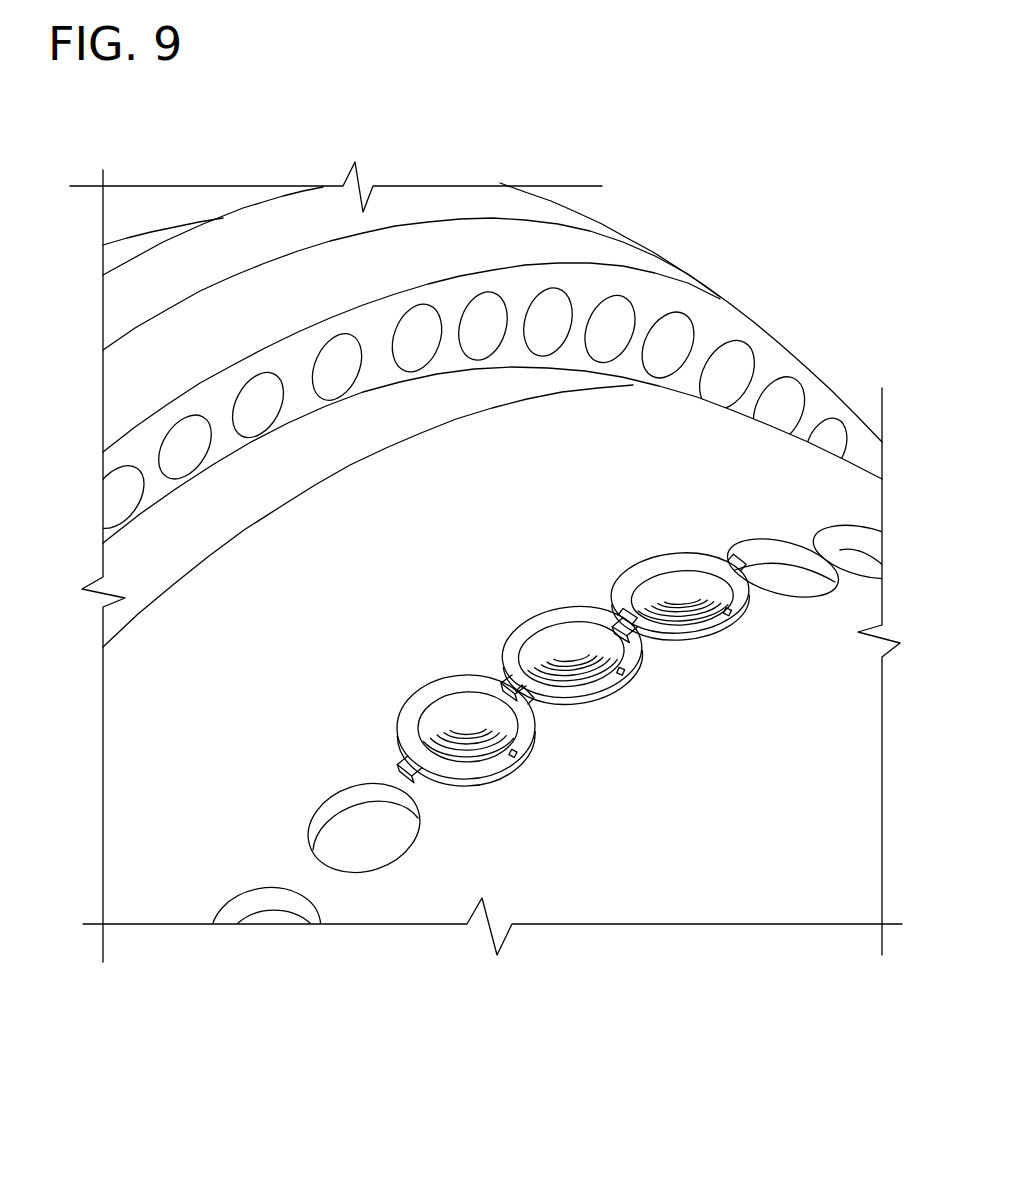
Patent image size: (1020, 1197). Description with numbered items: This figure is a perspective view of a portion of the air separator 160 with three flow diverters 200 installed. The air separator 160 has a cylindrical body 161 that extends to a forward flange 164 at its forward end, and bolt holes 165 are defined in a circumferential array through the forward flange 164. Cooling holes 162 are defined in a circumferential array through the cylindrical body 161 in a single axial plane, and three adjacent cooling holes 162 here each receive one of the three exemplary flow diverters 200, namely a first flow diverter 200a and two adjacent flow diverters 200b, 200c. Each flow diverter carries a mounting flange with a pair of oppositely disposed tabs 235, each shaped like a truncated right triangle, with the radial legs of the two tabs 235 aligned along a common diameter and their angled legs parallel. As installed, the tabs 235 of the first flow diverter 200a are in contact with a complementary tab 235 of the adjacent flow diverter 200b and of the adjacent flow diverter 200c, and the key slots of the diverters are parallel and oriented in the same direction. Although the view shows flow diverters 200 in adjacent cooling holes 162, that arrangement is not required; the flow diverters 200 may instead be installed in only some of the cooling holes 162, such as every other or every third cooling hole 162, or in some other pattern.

The air separator 160 is at (715, 848).
The cylindrical body 161 is at (137, 756).
The cooling holes 162 is at (367, 847).
The forward flange 164 is at (625, 258).
The bolt holes 165 is at (612, 318).
The flow diverters 200 is at (613, 658).
The first flow diverter 200a is at (632, 692).
The adjacent flow diverter 200b is at (717, 643).
The adjacent flow diverter 200c is at (493, 788).
The tabs 235 is at (506, 683).